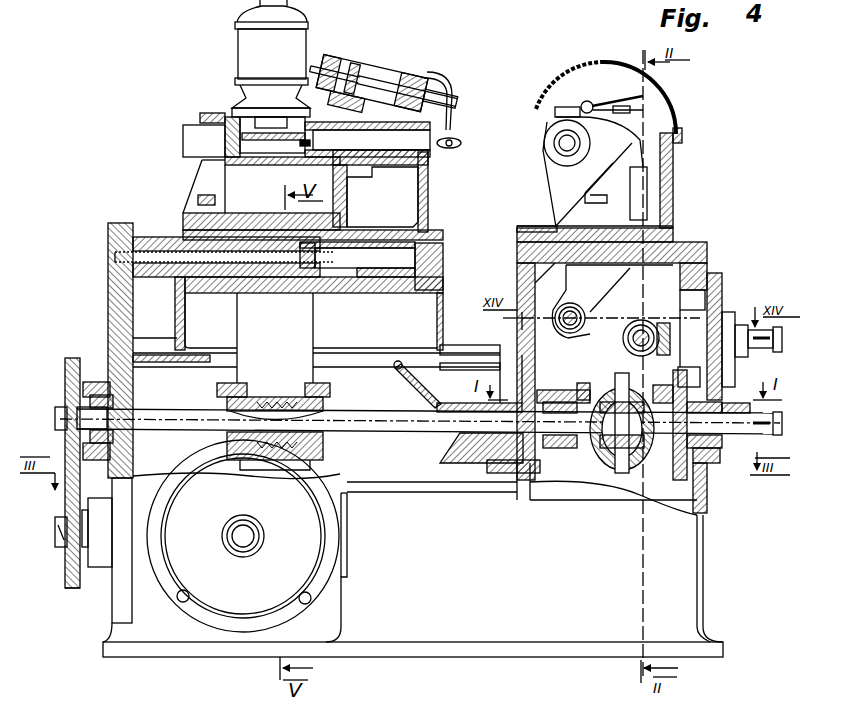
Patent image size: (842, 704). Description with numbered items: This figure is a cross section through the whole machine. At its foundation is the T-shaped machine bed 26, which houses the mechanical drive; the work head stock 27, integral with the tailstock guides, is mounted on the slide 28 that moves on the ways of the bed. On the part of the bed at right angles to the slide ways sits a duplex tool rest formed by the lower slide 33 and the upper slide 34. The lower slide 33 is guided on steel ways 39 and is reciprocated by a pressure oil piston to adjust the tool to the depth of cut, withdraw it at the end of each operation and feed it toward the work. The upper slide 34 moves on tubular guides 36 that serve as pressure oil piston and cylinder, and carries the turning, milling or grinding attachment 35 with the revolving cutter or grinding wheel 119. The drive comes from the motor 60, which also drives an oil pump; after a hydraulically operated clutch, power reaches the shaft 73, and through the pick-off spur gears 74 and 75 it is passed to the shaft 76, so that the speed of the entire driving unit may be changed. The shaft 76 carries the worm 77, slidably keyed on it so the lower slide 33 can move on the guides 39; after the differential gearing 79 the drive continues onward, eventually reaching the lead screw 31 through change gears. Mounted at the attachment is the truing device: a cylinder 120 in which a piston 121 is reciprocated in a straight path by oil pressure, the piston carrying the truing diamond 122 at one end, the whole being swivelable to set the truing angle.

The T-shaped machine bed 26 is at (522, 283).
The work head stock 27 is at (613, 187).
The slide 28 is at (695, 243).
The lead screw 31 is at (570, 332).
The lower slide 33 is at (437, 316).
The upper slide 34 is at (433, 238).
The turning, milling or grinding attachment 35 is at (427, 197).
The tubular guides 36 is at (397, 262).
The steel ways 39 is at (455, 347).
The motor 60 is at (243, 316).
The shaft 73 is at (62, 540).
The pick-off spur gear 74 is at (67, 590).
The pick-off spur gear 75 is at (68, 358).
The shaft 76 is at (363, 425).
The worm 77 is at (290, 452).
The differential gearing 79 is at (592, 462).
The revolving cutter or grinding wheel 119 is at (450, 137).
The cylinder 120 is at (362, 62).
The piston 121 is at (388, 85).
The truing diamond 122 is at (460, 143).